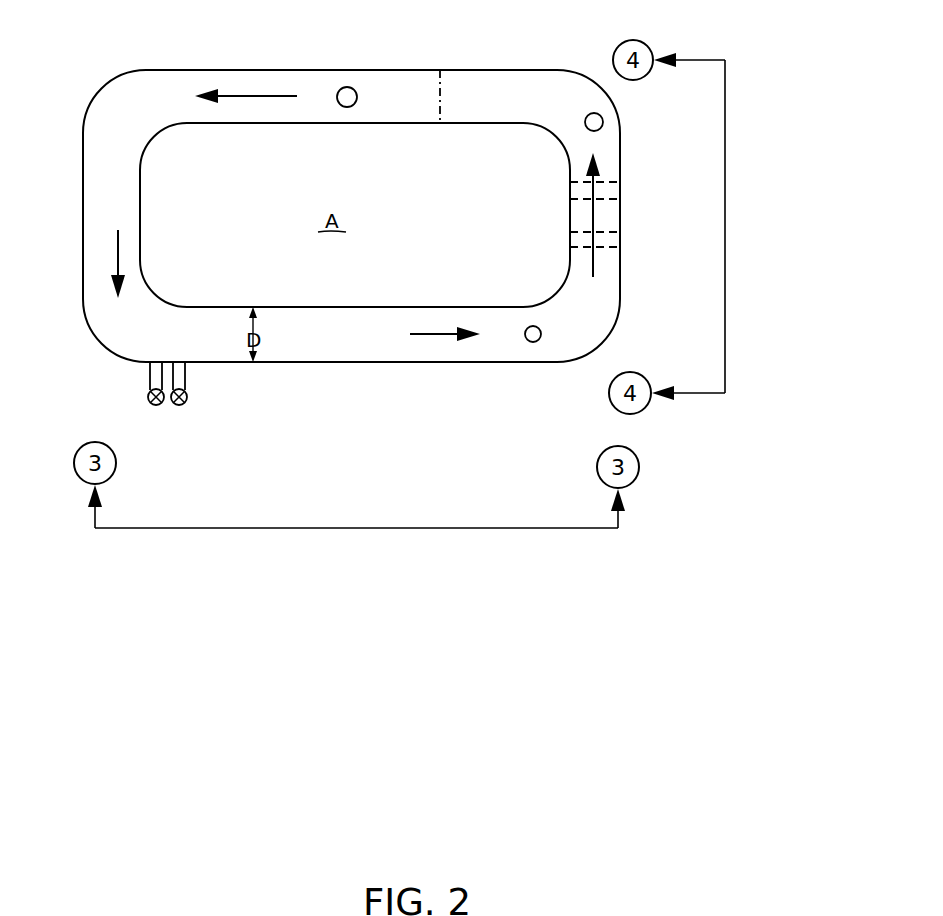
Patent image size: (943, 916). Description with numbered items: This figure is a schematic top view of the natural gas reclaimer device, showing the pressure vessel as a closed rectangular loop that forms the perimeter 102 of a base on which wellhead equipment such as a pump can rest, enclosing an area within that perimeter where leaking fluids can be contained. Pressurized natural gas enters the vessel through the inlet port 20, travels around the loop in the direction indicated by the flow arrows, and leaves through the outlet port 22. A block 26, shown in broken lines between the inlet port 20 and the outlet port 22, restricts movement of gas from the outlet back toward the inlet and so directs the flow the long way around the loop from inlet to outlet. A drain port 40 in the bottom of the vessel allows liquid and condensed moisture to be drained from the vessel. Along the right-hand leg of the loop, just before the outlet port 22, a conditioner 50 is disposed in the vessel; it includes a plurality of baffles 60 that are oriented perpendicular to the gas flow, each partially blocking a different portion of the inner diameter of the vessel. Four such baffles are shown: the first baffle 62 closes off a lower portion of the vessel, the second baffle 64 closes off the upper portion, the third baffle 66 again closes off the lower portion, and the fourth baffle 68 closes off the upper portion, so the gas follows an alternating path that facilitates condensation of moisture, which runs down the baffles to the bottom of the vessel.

The perimeter 102 is at (222, 70).
The inlet port 20 is at (347, 88).
The outlet port 22 is at (594, 113).
The block 26 is at (440, 70).
The drain port 40 is at (150, 400).
The conditioner 50 is at (685, 152).
The baffles 60 is at (695, 298).
The first baffle 62 is at (600, 175).
The second baffle 64 is at (602, 198).
The third baffle 66 is at (605, 232).
The fourth baffle 68 is at (608, 250).